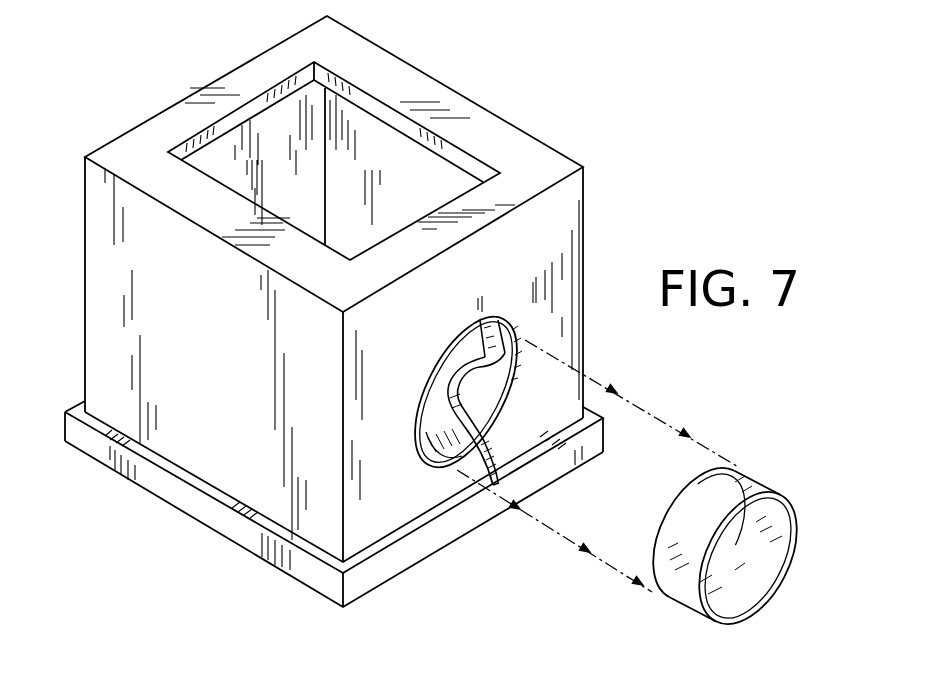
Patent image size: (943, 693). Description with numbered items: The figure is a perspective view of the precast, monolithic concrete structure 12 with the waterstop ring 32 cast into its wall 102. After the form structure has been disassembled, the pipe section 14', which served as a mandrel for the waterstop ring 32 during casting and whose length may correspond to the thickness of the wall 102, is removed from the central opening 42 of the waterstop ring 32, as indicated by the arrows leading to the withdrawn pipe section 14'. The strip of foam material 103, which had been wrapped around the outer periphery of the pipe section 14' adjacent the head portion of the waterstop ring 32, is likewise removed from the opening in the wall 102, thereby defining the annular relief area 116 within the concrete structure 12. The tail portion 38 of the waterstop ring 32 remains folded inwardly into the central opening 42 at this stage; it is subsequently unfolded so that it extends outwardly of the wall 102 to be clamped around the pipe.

The concrete structure 12 is at (585, 63).
The wall 102 is at (547, 217).
The tail portion 38 is at (512, 338).
The annular relief area 116 is at (482, 338).
The central opening 42 is at (432, 368).
The waterstop ring 32 is at (425, 463).
The strip of foam material 103 is at (494, 450).
The pipe section 14' is at (728, 539).